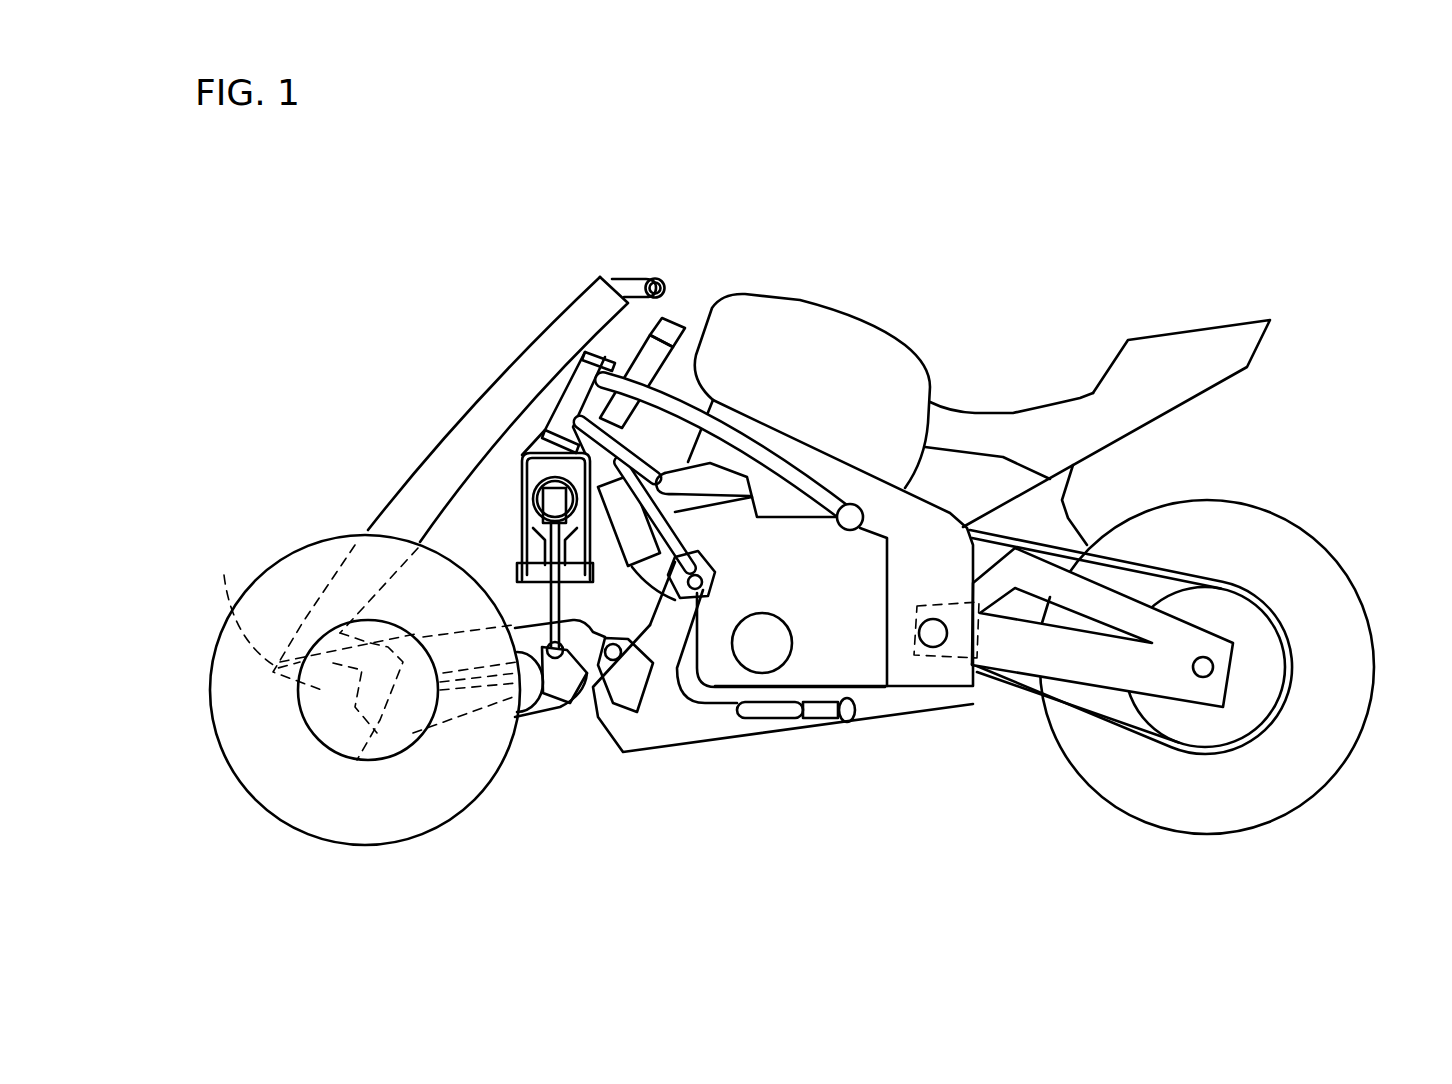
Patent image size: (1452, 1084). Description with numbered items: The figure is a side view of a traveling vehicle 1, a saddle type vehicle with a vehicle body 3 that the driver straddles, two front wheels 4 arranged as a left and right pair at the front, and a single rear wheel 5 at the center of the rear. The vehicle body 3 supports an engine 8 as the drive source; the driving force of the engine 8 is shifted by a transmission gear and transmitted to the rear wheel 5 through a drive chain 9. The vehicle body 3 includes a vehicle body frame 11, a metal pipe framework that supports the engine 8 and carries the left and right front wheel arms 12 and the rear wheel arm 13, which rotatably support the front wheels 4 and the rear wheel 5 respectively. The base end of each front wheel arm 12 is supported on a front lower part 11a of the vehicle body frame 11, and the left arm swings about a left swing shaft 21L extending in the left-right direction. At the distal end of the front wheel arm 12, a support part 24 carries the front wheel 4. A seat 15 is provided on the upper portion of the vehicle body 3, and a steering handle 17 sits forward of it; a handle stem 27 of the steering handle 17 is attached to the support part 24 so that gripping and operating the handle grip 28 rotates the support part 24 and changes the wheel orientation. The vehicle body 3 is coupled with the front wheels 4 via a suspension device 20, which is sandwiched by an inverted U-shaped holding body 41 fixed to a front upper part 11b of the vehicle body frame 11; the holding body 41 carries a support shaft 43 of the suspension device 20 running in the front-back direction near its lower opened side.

The traveling vehicle 1 is at (425, 237).
The vehicle body 3 is at (838, 300).
The front wheel 4 is at (278, 805).
The rear wheel 5 is at (1298, 792).
The engine 8 is at (820, 690).
The drive chain 9 is at (1087, 705).
The vehicle body frame 11 is at (740, 733).
The front lower part 11a is at (656, 733).
The front upper part 11b is at (577, 427).
The front wheel arm 12 is at (550, 710).
The rear wheel arm 13 is at (1173, 627).
The seat 15 is at (990, 425).
The steering handle 17 is at (688, 276).
The suspension device 20 is at (522, 458).
The left swing shaft 21L is at (614, 705).
The support part 24 is at (250, 601).
The handle stem 27 is at (518, 365).
The handle grip 28 is at (652, 280).
The holding body 41 is at (522, 498).
The support shaft 43 is at (515, 568).